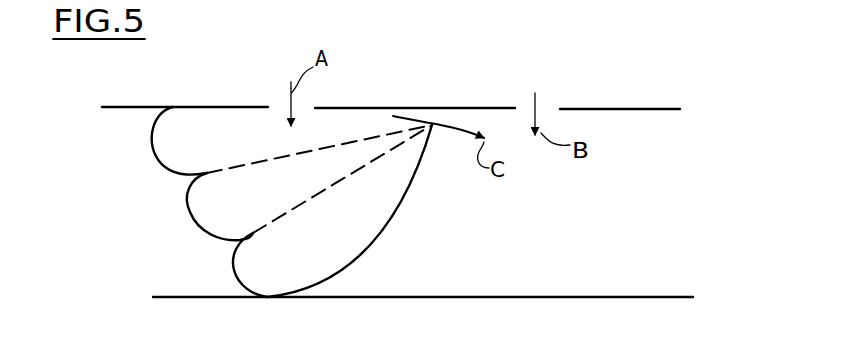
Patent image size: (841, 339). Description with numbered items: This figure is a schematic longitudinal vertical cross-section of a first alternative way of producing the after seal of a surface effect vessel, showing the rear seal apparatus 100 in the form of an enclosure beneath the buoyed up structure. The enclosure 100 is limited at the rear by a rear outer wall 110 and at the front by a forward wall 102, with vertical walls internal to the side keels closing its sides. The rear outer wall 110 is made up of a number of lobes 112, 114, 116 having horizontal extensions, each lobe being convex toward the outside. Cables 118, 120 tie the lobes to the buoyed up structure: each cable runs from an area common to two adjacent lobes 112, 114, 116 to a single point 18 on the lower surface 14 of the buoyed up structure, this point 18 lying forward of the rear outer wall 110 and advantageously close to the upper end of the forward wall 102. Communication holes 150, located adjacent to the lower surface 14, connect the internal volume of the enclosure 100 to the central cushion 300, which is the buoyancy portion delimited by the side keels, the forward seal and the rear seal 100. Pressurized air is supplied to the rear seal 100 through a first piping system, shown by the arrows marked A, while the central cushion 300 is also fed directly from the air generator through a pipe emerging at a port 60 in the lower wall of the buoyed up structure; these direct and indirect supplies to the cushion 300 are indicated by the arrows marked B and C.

The lower surface of the buoyed up structure 14 is at (654, 118).
The attachment point 18 is at (438, 104).
The port 60 is at (553, 106).
The rear seal apparatus 100 is at (136, 257).
The forward wall 102 is at (365, 242).
The rear outer wall 110 is at (165, 224).
The lobe 112 is at (153, 150).
The lobe 114 is at (190, 198).
The lobe 116 is at (233, 263).
The cable 118 is at (274, 153).
The cable 120 is at (338, 183).
The communication holes 150 is at (465, 118).
The central cushion 300 is at (641, 262).